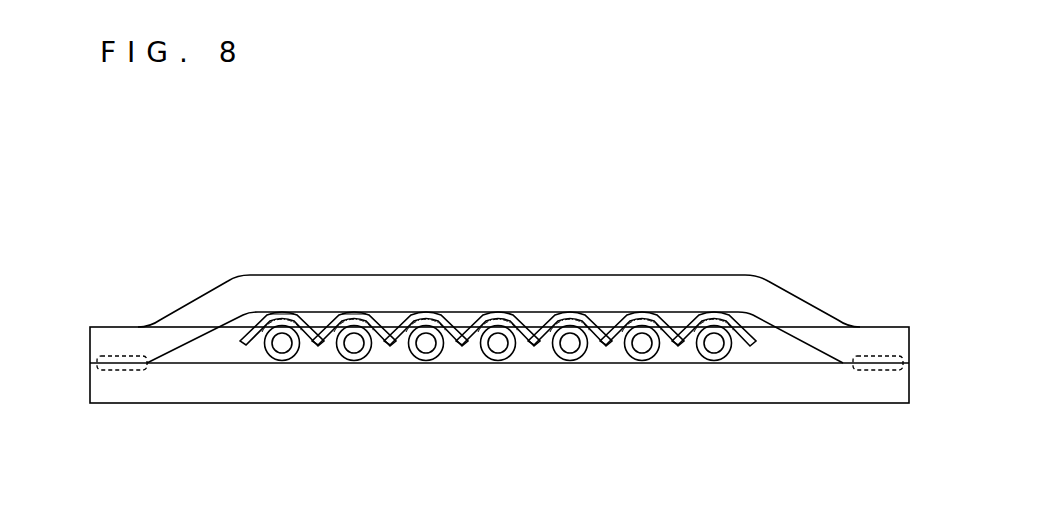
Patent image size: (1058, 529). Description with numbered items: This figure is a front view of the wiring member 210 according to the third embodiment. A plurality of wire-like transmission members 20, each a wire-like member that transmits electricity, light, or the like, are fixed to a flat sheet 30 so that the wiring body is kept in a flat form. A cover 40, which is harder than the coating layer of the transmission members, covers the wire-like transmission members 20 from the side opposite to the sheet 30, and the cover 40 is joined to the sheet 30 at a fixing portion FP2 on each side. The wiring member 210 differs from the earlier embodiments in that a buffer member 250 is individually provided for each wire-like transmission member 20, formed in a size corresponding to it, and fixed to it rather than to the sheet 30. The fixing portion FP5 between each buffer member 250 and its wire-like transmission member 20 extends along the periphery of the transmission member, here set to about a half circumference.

The wiring member 210 is at (160, 241).
The buffer member 250 is at (243, 320).
The fixing portion FP5 is at (352, 316).
The cover 40 is at (570, 287).
The fixing portion FP2 is at (121, 372).
The wire-like transmission member 20 is at (334, 350).
The sheet 30 is at (580, 389).